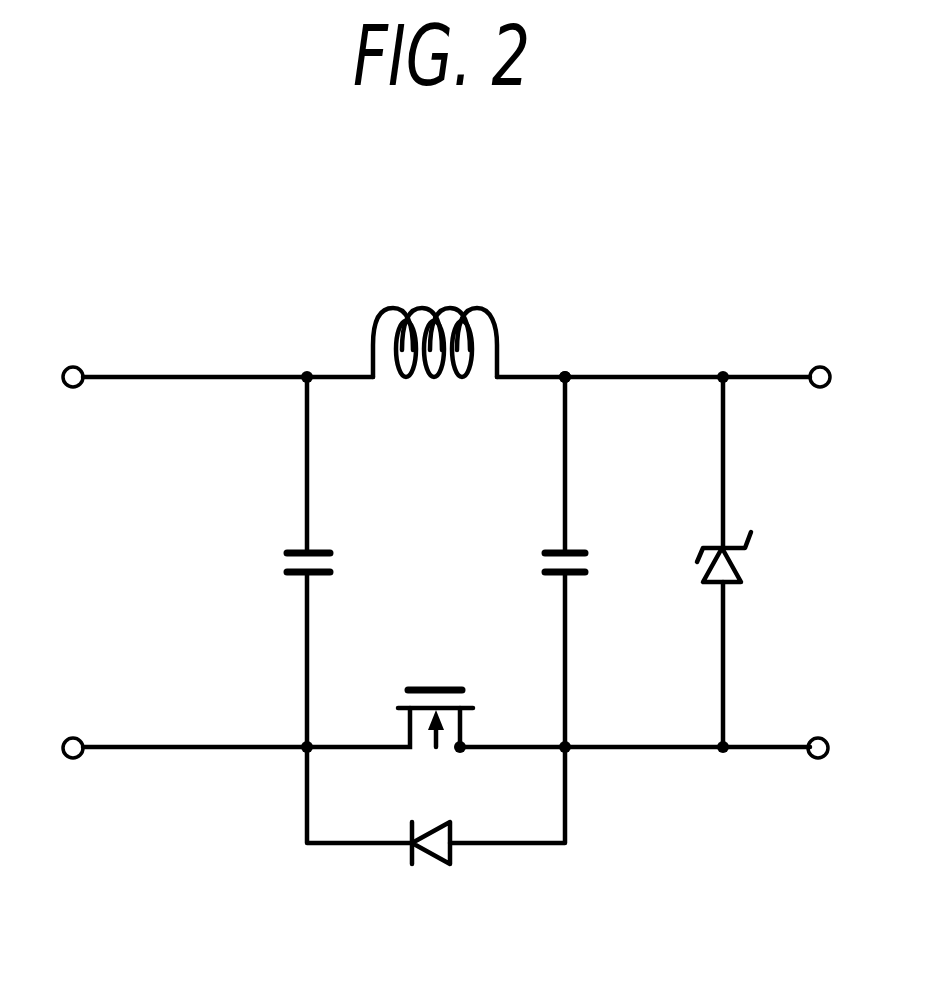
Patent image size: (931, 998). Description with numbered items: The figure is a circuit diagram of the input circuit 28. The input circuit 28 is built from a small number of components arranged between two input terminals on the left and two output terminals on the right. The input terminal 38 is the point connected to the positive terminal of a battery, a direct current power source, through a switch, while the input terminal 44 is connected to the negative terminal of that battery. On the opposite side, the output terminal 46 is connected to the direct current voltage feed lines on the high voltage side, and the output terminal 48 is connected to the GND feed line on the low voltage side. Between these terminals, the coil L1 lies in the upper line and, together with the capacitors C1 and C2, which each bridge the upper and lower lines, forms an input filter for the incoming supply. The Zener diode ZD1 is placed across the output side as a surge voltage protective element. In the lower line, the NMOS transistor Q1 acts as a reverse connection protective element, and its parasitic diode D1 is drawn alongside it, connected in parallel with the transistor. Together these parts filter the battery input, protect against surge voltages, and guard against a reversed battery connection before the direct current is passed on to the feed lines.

The input circuit 28 is at (562, 340).
The input terminal 38 is at (73, 367).
The input terminal 44 is at (72, 758).
The output terminal 46 is at (820, 367).
The output terminal 48 is at (817, 758).
The coil L1 is at (435, 318).
The capacitor C1 is at (333, 562).
The capacitor C2 is at (592, 562).
The Zener diode ZD1 is at (763, 562).
The NMOS transistor Q1 is at (435, 697).
The parasitic diode D1 is at (436, 805).